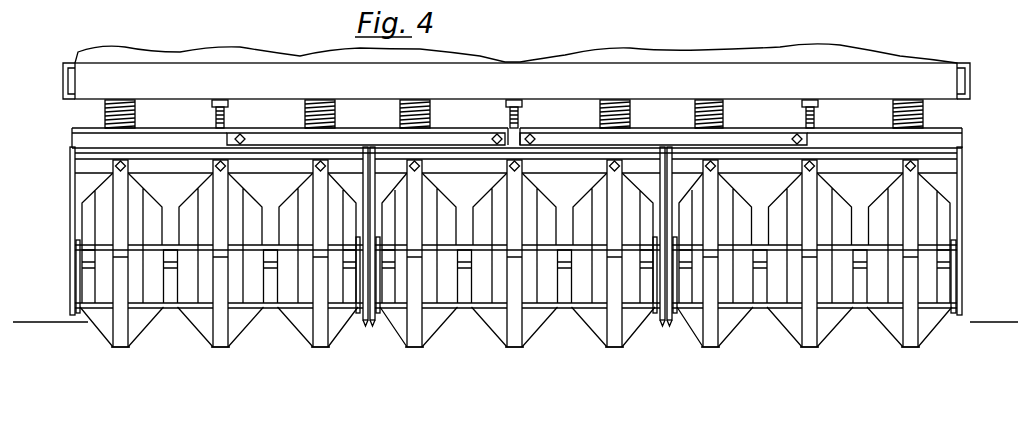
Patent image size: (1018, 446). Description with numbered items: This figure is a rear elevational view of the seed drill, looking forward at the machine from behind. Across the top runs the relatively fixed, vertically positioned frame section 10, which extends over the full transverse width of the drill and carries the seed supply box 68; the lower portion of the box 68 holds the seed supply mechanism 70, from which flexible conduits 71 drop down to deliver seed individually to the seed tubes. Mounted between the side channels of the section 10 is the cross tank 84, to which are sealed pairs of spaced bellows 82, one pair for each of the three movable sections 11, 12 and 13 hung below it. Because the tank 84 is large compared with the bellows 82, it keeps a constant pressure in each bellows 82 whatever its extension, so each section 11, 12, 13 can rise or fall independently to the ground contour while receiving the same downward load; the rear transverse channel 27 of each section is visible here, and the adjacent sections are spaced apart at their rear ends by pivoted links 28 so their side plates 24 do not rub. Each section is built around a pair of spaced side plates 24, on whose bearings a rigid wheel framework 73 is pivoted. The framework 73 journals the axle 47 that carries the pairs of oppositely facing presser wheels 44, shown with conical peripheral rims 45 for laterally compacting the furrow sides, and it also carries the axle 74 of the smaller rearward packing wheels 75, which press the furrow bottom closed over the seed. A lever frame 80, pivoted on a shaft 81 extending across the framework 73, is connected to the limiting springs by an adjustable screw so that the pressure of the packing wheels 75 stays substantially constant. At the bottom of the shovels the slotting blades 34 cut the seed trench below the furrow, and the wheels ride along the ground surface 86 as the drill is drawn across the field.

The vertically positioned frame section 10 is at (968, 61).
The movable section 11 is at (762, 118).
The movable section 12 is at (550, 118).
The movable section 13 is at (265, 122).
The side plate 24 is at (962, 172).
The rear transverse channel 27 is at (652, 128).
The pivoted link 28 is at (780, 140).
The slotting blade 34 is at (519, 6).
The presser wheel 44 is at (505, 327).
The conical peripheral rim 45 is at (497, 177).
The axle 47 is at (860, 255).
The seed supply box 68 is at (222, 61).
The seed supply mechanism 70 is at (822, 110).
The conduit 71 is at (817, 124).
The wheel framework 73 is at (668, 322).
The axle 74 is at (765, 304).
The packing wheel 75 is at (903, 332).
The lever frame 80 is at (752, 166).
The shaft 81 is at (950, 244).
The bellows 82 is at (924, 113).
The cross tank 84 is at (562, 89).
The ground surface 86 is at (975, 322).